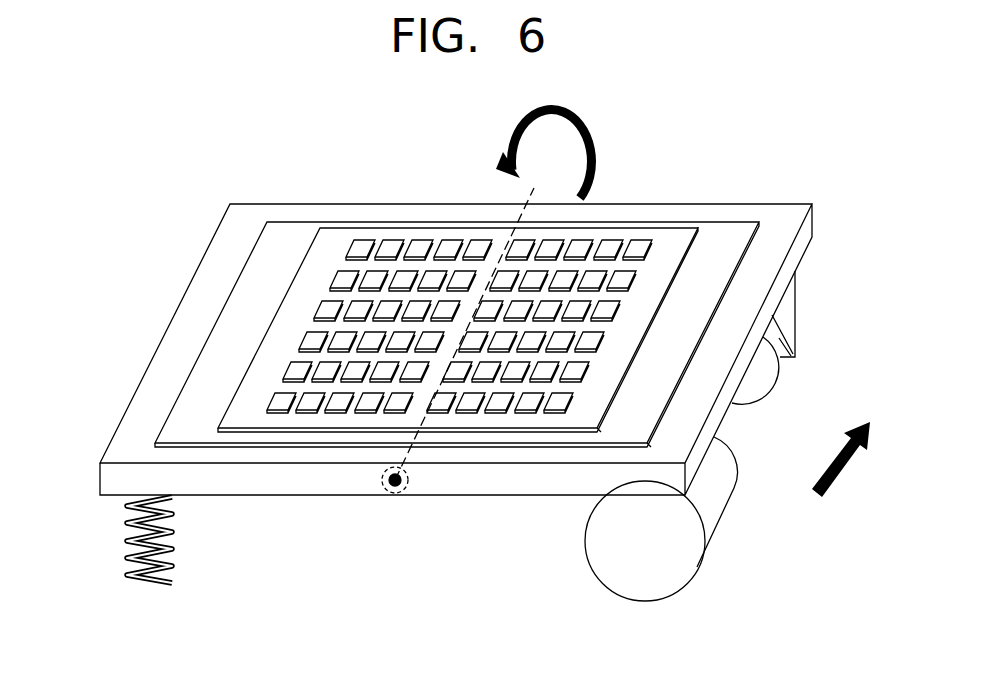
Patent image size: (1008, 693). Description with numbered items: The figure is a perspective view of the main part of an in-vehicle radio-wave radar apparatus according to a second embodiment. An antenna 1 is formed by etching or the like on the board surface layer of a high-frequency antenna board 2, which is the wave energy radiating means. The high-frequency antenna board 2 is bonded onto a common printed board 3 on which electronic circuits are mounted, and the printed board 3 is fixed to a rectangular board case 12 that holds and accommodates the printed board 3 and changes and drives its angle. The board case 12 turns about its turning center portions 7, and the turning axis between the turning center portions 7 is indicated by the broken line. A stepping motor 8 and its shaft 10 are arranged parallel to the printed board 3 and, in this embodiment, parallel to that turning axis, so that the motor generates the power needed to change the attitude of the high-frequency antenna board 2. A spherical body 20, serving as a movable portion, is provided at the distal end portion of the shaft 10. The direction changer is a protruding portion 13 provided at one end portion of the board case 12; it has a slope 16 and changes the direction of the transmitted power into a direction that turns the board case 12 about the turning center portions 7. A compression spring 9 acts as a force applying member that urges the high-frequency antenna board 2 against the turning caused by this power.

The antenna 1 is at (366, 240).
The high-frequency antenna board 2 is at (305, 247).
The printed board 3 is at (718, 240).
The turning center portions 7 is at (395, 494).
The stepping motor 8 is at (648, 573).
The compression spring 9 is at (165, 530).
The shaft 10 is at (732, 420).
The board case 12 is at (778, 220).
The protruding portion 13 is at (797, 301).
The slope 16 is at (790, 345).
The spherical body 20 is at (765, 377).